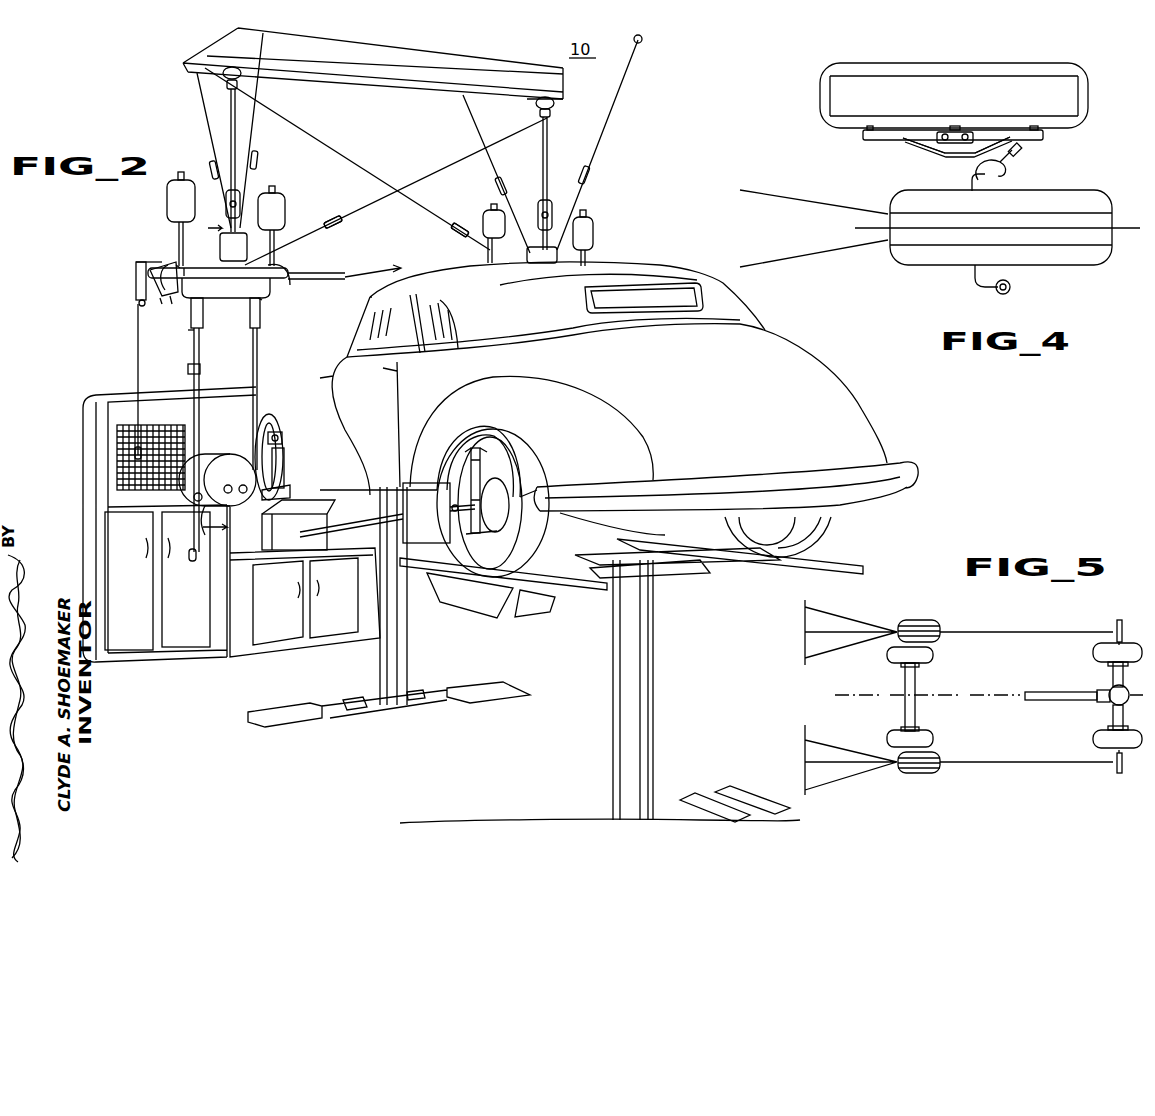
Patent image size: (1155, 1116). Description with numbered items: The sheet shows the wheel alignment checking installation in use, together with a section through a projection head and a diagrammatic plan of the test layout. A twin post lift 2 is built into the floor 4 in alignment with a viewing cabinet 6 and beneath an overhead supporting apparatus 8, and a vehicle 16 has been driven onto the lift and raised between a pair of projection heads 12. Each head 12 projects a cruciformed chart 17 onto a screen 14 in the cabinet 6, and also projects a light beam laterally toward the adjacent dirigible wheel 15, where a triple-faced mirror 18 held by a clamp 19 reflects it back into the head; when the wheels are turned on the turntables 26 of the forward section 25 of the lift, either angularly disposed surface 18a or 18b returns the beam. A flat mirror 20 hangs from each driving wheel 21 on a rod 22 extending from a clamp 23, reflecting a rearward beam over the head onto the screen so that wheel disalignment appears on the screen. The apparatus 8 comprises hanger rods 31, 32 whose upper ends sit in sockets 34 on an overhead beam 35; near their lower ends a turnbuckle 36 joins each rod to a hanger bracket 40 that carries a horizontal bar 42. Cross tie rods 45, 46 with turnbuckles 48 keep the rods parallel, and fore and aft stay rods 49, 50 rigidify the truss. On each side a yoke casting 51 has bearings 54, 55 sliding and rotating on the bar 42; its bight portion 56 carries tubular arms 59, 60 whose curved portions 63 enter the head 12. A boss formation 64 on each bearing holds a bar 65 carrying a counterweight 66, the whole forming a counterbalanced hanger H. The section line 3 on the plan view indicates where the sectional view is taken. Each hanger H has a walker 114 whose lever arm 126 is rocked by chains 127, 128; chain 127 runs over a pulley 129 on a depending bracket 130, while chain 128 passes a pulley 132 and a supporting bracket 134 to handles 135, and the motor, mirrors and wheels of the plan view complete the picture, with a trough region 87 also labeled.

In FIG. 2, the twin post lift 2 is at (610, 651).
In FIG. 2, the section line 3 is at (220, 374).
In FIG. 2, the floor 4 is at (484, 754).
In FIG. 2, the viewing cabinet 6 is at (83, 518).
In FIG. 2, the overhead supporting apparatus 8 is at (368, 266).
In FIG. 2, the projection head 12 is at (215, 462).
In FIG. 4, the projection head 12 is at (1085, 258).
In FIG. 5, the projection head 12 is at (919, 622).
In FIG. 2, the screen 14 is at (111, 446).
In FIG. 5, the screen 14 is at (805, 640).
In FIG. 2, the dirigible wheel 15 is at (286, 497).
In FIG. 4, the dirigible wheel 15 is at (830, 92).
In FIG. 5, the dirigible wheel 15 is at (933, 656).
In FIG. 2, the vehicle 16 is at (797, 369).
In FIG. 5, the vehicle 16 is at (1057, 692).
In FIG. 2, the cruciformed chart 17 is at (120, 468).
In FIG. 2, the triple-faced mirror 18 is at (282, 466).
In FIG. 4, the triple-faced mirror 18 is at (945, 154).
In FIG. 4, the angularly disposed surface 18a is at (915, 142).
In FIG. 4, the angularly disposed surface 18b is at (1018, 150).
In FIG. 2, the clamp 19 is at (276, 436).
In FIG. 4, the clamp 19 is at (938, 134).
In FIG. 2, the flat mirror 20 is at (440, 529).
In FIG. 5, the flat mirror 20 is at (1116, 622).
In FIG. 2, the driving wheel 21 is at (520, 548).
In FIG. 5, the driving wheel 21 is at (1095, 652).
In FIG. 2, the rod 22 is at (380, 516).
In FIG. 5, the rod 22 is at (1127, 630).
In FIG. 2, the clamp 23 is at (483, 493).
In FIG. 2, the forward section 25 is at (345, 550).
In FIG. 2, the turntable 26 is at (275, 528).
In FIG. 2, the hanger rod 31 is at (230, 128).
In FIG. 2, the hanger rod 32 is at (547, 147).
In FIG. 2, the socket 34 is at (198, 73).
In FIG. 2, the overhead beam 35 is at (405, 70).
In FIG. 2, the turnbuckle 36 is at (241, 202).
In FIG. 2, the hanger bracket 40 is at (219, 247).
In FIG. 2, the bar 42 is at (352, 284).
In FIG. 2, the cross tie rod 45 is at (348, 158).
In FIG. 2, the cross tie rod 46 is at (457, 160).
In FIG. 2, the turnbuckle 48 is at (336, 222).
In FIG. 2, the stay rod 49 is at (200, 103).
In FIG. 2, the stay rod 50 is at (262, 92).
In FIG. 2, the yoke casting 51 is at (262, 300).
In FIG. 2, the bearing 54 is at (186, 272).
In FIG. 2, the bearing 55 is at (289, 274).
In FIG. 2, the bight portion 56 is at (215, 305).
In FIG. 2, the tubular arm 59 is at (200, 344).
In FIG. 4, the tubular arm 59 is at (1006, 294).
In FIG. 2, the tubular arm 60 is at (258, 349).
In FIG. 4, the tubular arm 60 is at (1012, 162).
In FIG. 2, the curved portion 63 is at (205, 503).
In FIG. 4, the curved portion 63 is at (975, 176).
In FIG. 2, the boss formation 64 is at (178, 266).
In FIG. 2, the bar 65 is at (180, 238).
In FIG. 2, the counterweight 66 is at (175, 196).
In FIG. 2, the trough 87 is at (228, 292).
In FIG. 2, the walker 114 is at (156, 262).
In FIG. 2, the lever arm 126 is at (163, 300).
In FIG. 2, the chain 127 is at (138, 352).
In FIG. 2, the chain 128 is at (194, 338).
In FIG. 2, the pulley 129 is at (138, 305).
In FIG. 2, the depending bracket 130 is at (136, 291).
In FIG. 2, the pulley 132 is at (172, 300).
In FIG. 2, the supporting bracket 134 is at (200, 368).
In FIG. 2, the handle 135 is at (192, 560).
In FIG. 2, the hanger H is at (279, 325).